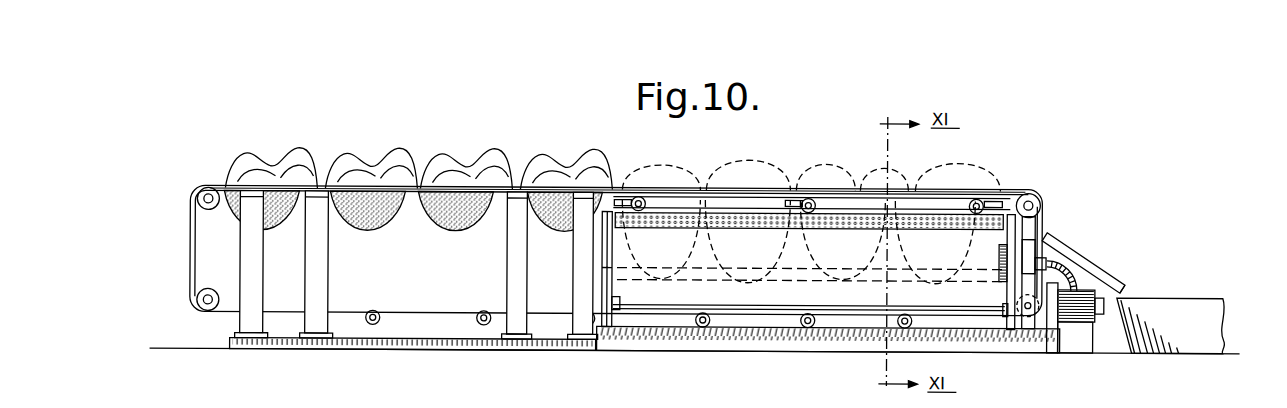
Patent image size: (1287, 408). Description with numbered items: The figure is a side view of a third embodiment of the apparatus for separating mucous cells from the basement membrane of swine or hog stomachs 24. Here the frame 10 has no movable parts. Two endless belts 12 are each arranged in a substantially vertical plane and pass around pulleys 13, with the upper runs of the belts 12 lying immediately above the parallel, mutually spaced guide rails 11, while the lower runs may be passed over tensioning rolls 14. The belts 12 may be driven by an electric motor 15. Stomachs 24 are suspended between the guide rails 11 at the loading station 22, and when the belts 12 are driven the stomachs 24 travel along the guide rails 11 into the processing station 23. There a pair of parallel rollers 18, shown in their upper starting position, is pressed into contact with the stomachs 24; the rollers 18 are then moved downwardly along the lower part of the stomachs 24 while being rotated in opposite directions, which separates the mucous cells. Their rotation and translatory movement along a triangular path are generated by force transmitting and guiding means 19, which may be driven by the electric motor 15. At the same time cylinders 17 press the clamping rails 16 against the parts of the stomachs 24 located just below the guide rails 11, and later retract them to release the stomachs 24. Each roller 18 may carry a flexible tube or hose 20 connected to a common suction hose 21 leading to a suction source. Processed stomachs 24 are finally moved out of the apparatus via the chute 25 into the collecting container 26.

The frame 10 is at (240, 258).
The guide rails 11 is at (228, 191).
The endless belts 12 is at (190, 226).
The pulleys 13 is at (200, 192).
The tensioning rolls 14 is at (376, 327).
The electric motor 15 is at (1093, 322).
The clamping rails 16 is at (905, 214).
The cylinders 17 is at (640, 197).
The rollers 18 is at (714, 222).
The force transmitting and guiding means 19 is at (1022, 278).
The flexible tube or hose 20 is at (1003, 246).
The common suction hose 21 is at (1086, 264).
The loading station 22 is at (410, 192).
The processing station 23 is at (764, 192).
The stomachs 24 is at (316, 165).
The chute 25 is at (1126, 293).
The collecting container 26 is at (1186, 297).